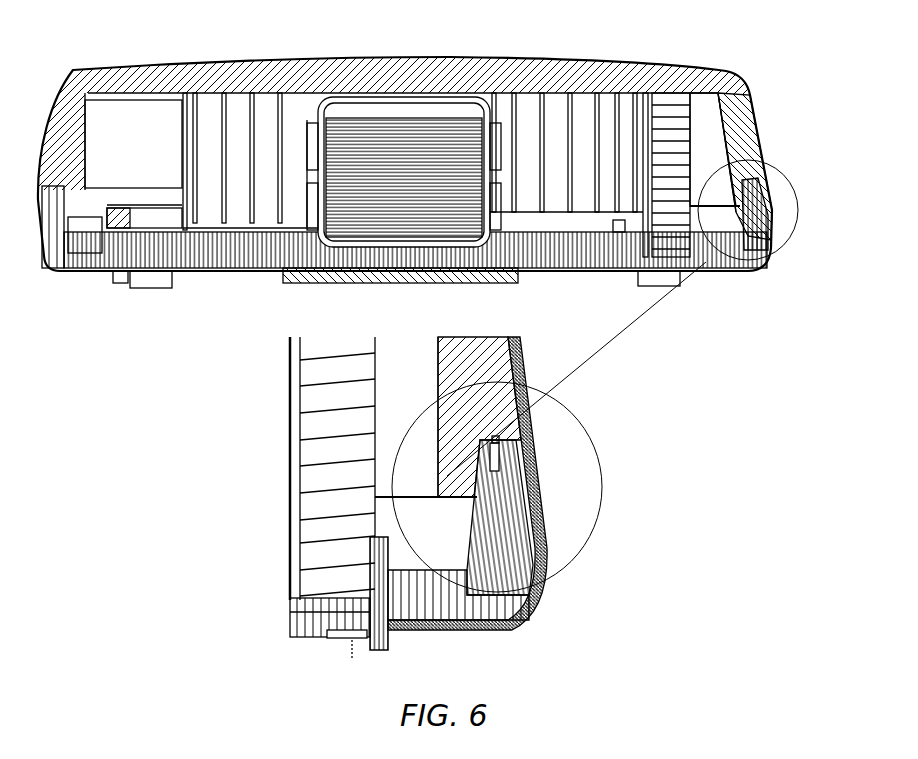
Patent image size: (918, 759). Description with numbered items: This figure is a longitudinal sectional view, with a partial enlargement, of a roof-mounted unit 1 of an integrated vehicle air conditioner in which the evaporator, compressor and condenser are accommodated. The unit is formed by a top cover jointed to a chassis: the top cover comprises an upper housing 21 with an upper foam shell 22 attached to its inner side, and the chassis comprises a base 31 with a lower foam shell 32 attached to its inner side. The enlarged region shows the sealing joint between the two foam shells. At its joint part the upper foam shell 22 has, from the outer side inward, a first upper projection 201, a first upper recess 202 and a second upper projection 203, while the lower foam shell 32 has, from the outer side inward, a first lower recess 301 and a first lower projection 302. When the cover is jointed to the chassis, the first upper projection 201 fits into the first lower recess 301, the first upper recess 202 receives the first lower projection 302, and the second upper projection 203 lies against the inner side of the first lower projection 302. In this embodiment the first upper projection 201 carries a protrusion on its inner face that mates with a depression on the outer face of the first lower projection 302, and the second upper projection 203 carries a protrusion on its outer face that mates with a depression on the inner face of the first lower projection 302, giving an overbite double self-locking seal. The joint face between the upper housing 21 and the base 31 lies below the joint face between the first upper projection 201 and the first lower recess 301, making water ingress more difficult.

The roof-mounted unit 1 is at (842, 42).
The upper housing 21 is at (757, 121).
The upper foam shell 22 is at (745, 147).
The base 31 is at (763, 266).
The lower foam shell 32 is at (748, 231).
The first upper projection 201 is at (523, 455).
The first upper recess 202 is at (604, 433).
The second upper projection 203 is at (554, 483).
The first lower recess 301 is at (594, 517).
The first lower projection 302 is at (554, 567).